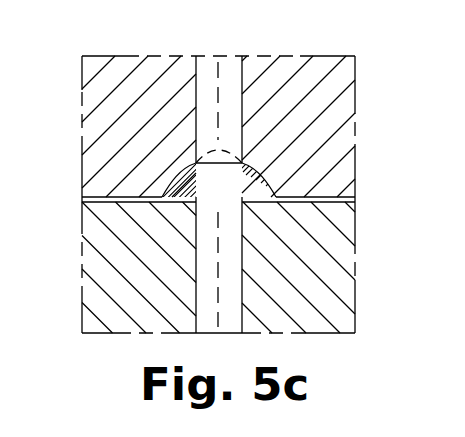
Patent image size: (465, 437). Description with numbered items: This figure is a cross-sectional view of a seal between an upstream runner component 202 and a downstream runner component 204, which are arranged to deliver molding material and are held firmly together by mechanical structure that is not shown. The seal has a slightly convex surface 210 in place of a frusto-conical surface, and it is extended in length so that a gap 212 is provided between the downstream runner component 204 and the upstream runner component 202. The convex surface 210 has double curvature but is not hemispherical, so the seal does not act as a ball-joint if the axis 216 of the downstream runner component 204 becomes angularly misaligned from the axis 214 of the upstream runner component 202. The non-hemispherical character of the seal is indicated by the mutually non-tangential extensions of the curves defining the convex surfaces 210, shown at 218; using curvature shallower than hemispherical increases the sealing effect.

The upstream runner component 202 is at (163, 143).
The downstream runner component 204 is at (163, 287).
The slightly convex surface 210 is at (260, 178).
The gap 212 is at (82, 198).
The axis of the upstream runner component 214 is at (217, 95).
The axis of the downstream runner component 216 is at (218, 275).
The mutually non-tangential extensions of the curves 218 is at (223, 150).